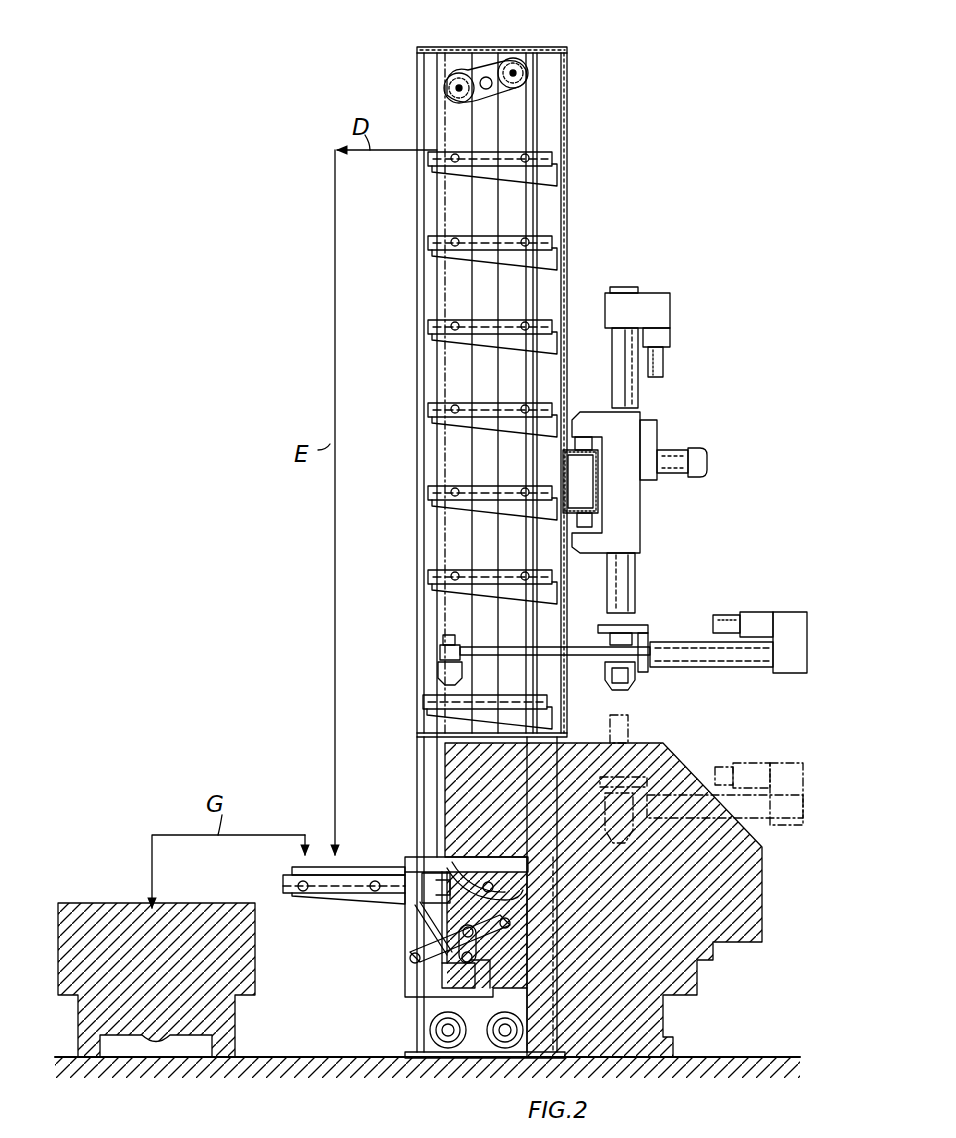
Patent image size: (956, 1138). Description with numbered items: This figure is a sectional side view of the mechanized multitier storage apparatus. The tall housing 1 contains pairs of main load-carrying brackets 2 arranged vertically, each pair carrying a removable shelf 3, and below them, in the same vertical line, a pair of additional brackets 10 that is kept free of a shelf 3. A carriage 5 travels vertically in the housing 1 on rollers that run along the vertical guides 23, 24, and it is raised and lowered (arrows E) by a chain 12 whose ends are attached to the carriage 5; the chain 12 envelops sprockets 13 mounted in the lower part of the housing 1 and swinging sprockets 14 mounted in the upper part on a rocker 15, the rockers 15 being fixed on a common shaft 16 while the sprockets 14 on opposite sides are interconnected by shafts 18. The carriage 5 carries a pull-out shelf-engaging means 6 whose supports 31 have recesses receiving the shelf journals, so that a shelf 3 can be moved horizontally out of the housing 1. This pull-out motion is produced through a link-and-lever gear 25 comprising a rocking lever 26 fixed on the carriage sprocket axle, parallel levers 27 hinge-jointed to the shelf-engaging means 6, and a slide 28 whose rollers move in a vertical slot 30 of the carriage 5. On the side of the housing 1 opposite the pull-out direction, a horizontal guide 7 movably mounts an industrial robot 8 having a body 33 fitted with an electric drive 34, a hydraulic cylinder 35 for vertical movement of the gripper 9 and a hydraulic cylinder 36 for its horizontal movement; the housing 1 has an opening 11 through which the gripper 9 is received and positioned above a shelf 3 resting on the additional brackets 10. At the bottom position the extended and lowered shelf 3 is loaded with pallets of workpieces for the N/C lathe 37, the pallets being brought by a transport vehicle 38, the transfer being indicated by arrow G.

The housing 1 is at (567, 176).
The main load-carrying brackets 2 is at (548, 253).
The removable shelves 3 is at (290, 882).
The carriages 5 is at (406, 976).
The pull-out shelf-engaging means 6 is at (430, 888).
The horizontal guide 7 is at (600, 492).
The industrial robot 8 is at (645, 489).
The gripper 9 is at (437, 670).
The additional brackets 10 is at (436, 706).
The opening 11 is at (570, 673).
The chain 12 is at (532, 194).
The sprockets 13 is at (502, 1045).
The swinging sprockets 14 is at (448, 86).
The rocker 15 is at (472, 70).
The common shaft 16 is at (492, 88).
The shafts 18 is at (510, 88).
The vertical guide 23 is at (548, 136).
The vertical guide 24 is at (432, 447).
The link-and-lever gear 25 is at (425, 933).
The rocking lever 26 is at (417, 914).
The parallel levers 27 is at (445, 950).
The slide 28 is at (455, 978).
The vertical slot 30 is at (473, 985).
The supports 31 is at (443, 880).
The body 33 is at (624, 430).
The electric drive 34 is at (672, 458).
The hydraulic cylinder 35 is at (613, 370).
The hydraulic cylinder 36 is at (676, 648).
The N/C lathe 37 is at (746, 874).
The transport vehicle 38 is at (100, 910).